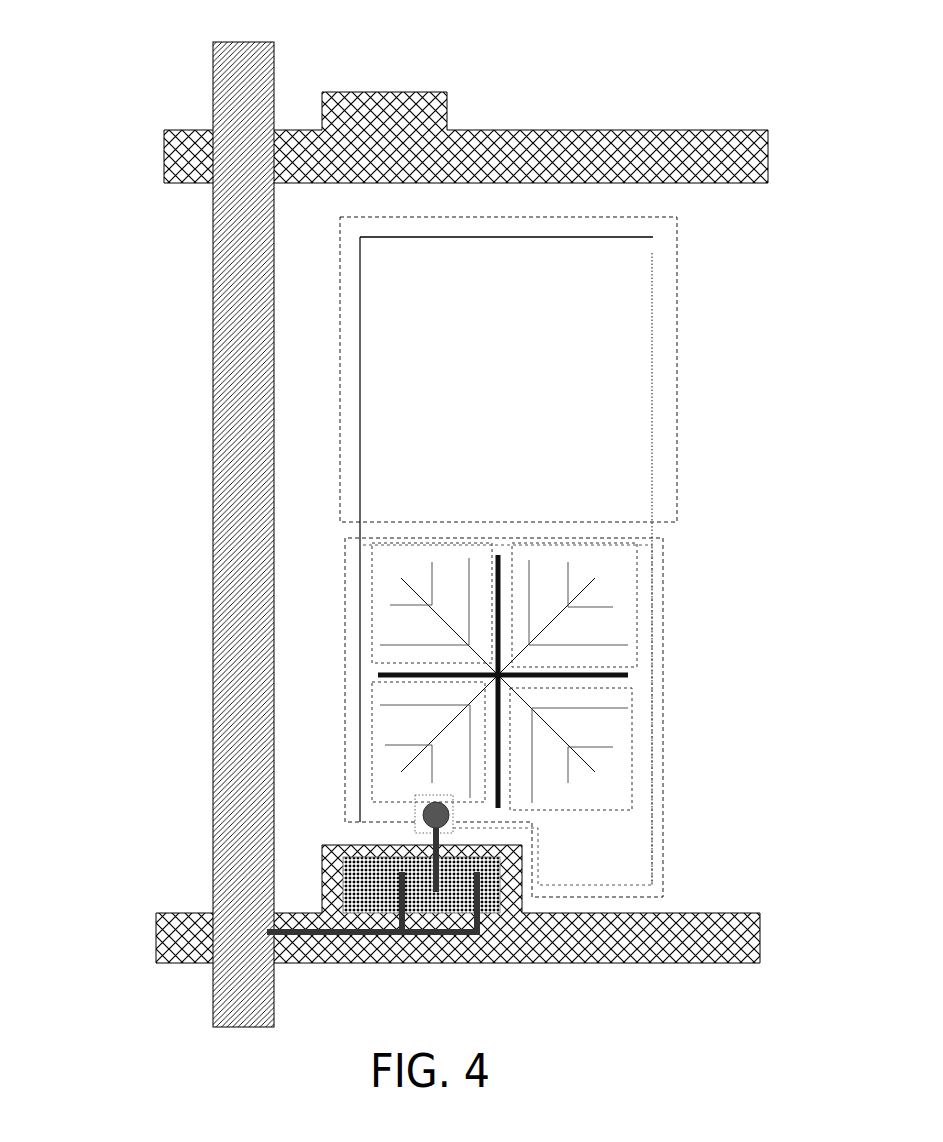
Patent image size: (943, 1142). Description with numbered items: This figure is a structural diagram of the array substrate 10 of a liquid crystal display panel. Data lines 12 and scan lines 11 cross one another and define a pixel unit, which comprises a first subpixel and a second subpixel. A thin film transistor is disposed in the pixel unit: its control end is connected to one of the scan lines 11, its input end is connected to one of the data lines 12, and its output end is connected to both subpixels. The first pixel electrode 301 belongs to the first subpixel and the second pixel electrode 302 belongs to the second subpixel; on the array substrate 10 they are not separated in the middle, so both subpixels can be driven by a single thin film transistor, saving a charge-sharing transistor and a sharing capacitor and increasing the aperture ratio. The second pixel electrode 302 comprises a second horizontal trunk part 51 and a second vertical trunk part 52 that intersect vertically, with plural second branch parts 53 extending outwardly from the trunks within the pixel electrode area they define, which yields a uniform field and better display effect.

The array substrate 10 is at (120, 92).
The scan lines 11 is at (768, 155).
The data lines 12 is at (274, 62).
The first pixel electrode 301 is at (677, 377).
The second pixel electrode 302 is at (663, 647).
The second horizontal trunk part 51 is at (630, 675).
The second vertical trunk part 52 is at (500, 555).
The second branch parts 53 is at (372, 612).